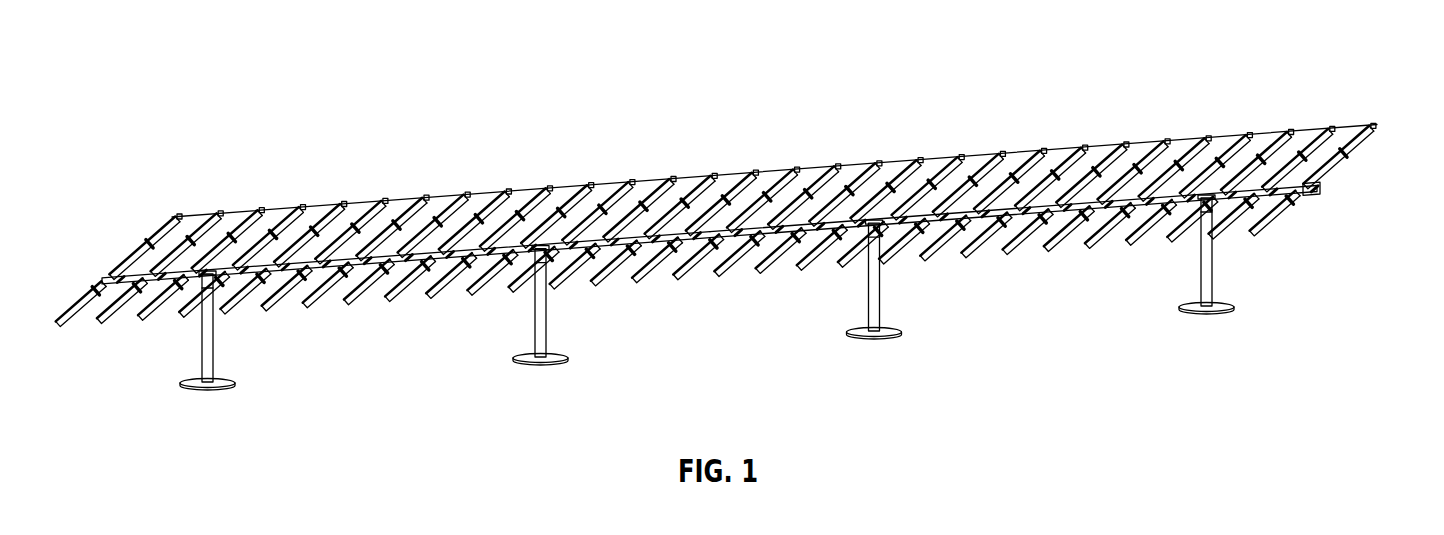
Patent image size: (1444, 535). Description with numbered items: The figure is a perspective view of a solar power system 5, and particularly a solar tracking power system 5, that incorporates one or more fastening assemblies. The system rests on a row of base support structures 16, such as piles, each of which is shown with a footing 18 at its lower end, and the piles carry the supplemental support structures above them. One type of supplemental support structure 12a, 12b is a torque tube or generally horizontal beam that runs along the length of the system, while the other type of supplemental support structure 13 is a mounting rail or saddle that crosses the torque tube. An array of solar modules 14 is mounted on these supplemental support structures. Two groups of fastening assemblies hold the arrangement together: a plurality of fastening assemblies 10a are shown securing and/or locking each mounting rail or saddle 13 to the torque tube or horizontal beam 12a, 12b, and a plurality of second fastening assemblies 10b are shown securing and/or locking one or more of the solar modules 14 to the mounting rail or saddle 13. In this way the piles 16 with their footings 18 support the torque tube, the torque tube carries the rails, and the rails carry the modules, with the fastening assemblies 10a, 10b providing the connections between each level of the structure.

The solar power system 5 is at (130, 108).
The fastening assemblies 10a is at (1118, 205).
The second fastening assemblies 10b is at (1060, 170).
The supplemental support structure 12a is at (397, 270).
The supplemental support structure 12b is at (1300, 202).
The supplemental support structure 13 is at (188, 241).
The solar modules 14 is at (187, 220).
The base support structures 16 is at (210, 342).
The foundations 18 is at (230, 385).